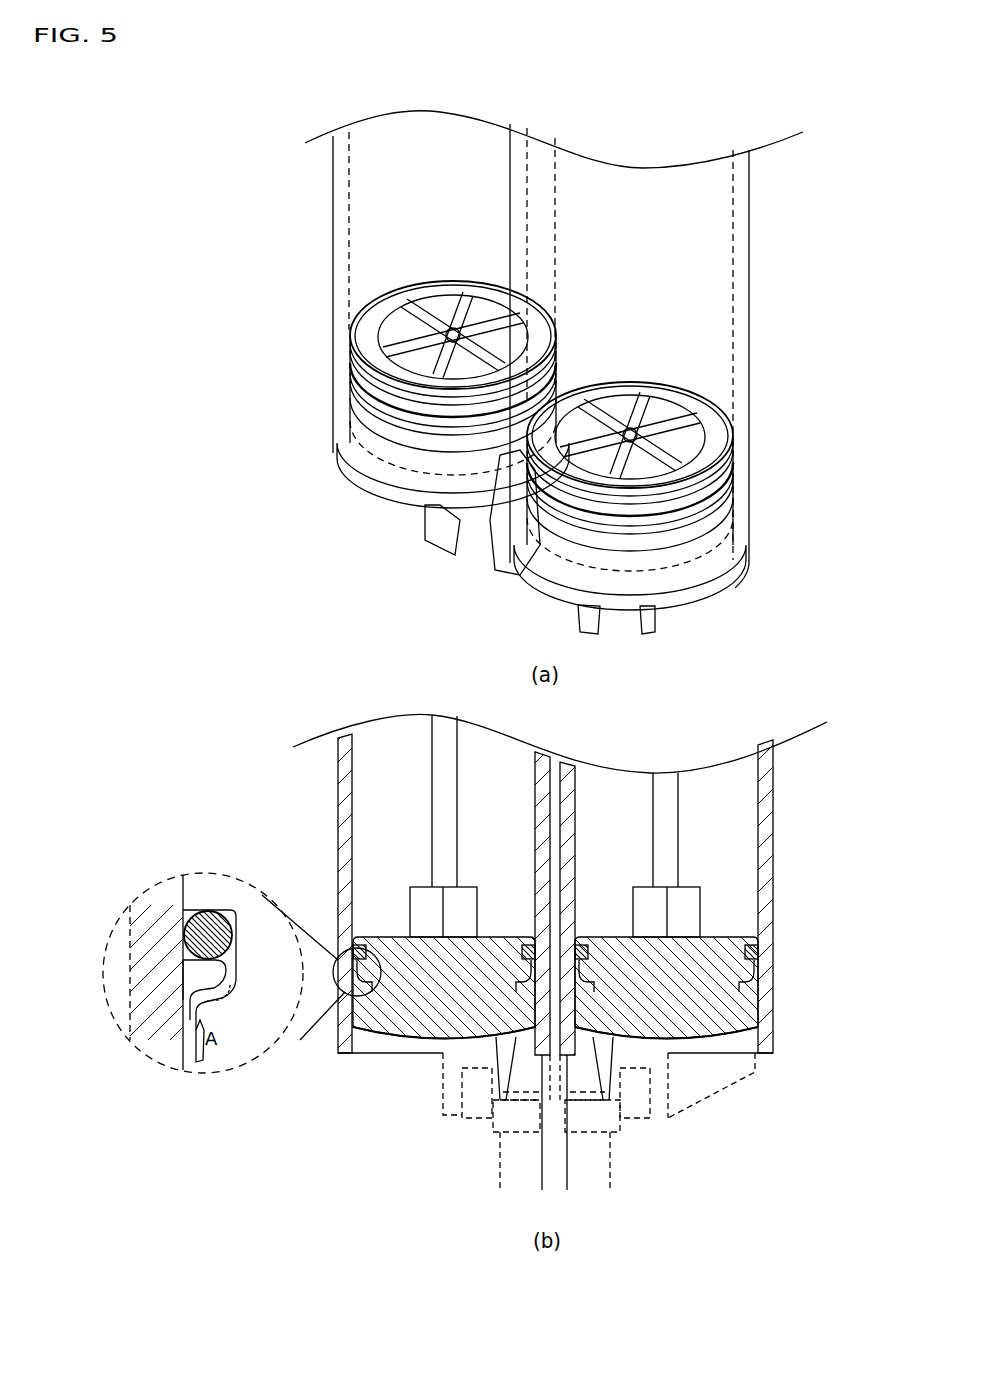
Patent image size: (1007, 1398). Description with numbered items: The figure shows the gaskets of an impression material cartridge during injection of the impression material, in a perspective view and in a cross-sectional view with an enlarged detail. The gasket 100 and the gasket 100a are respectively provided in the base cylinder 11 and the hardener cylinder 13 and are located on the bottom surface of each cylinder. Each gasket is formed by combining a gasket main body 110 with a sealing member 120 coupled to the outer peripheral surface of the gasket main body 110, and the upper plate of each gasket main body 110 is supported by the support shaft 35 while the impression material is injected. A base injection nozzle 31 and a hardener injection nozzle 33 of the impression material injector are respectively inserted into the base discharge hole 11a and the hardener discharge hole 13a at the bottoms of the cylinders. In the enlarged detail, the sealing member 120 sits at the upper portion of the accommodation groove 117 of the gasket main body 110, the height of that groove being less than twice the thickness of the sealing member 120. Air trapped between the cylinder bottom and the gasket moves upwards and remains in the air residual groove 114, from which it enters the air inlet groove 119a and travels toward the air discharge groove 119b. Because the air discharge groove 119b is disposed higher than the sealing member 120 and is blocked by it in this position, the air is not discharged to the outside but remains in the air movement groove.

The base cylinder 11 is at (742, 226).
The hardener cylinder 13 is at (333, 212).
The gasket 100 is at (688, 765).
The gasket 100a is at (365, 337).
The gasket main body 110 is at (722, 443).
The sealing member 120 is at (723, 480).
The accommodation groove 117 is at (762, 952).
The air inlet groove 119a is at (157, 972).
The air discharge groove 119b is at (237, 958).
The air residual groove 114 is at (187, 1040).
The support shaft 35 is at (665, 787).
The hardener discharge hole 13a is at (522, 1132).
The base discharge hole 11a is at (588, 1133).
The hardener injection nozzle 33 is at (523, 1182).
The base injection nozzle 31 is at (587, 1182).